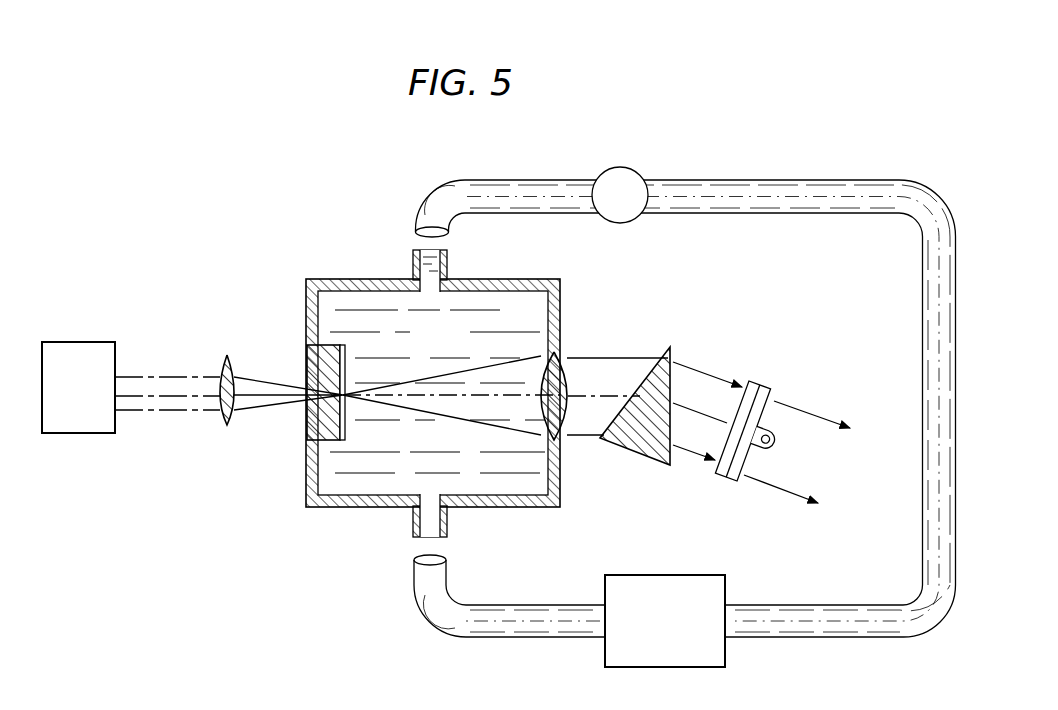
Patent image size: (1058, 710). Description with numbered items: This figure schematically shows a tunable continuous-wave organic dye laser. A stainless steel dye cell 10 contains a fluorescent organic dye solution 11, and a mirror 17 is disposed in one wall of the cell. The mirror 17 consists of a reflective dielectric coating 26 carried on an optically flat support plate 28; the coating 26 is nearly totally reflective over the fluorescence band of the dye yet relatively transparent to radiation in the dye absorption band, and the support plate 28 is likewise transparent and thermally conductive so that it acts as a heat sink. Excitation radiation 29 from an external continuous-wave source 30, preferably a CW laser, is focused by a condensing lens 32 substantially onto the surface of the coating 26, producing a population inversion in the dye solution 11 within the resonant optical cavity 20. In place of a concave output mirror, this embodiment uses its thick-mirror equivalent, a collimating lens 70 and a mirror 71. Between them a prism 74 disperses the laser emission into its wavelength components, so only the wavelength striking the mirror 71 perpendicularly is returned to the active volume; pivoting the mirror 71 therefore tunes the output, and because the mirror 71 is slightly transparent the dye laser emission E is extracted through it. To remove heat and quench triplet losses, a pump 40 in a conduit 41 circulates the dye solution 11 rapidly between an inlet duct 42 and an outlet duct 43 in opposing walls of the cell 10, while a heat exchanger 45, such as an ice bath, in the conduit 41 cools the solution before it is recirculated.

The dye cell 10 is at (355, 509).
The fluorescent organic dye solution 11 is at (482, 488).
The mirror 17 is at (323, 446).
The resonant optical cavity 20 is at (428, 366).
The reflective dielectric coating 26 is at (344, 378).
The optically flat support plate 28 is at (314, 362).
The radiation 29 is at (166, 411).
The external continuous-wave source 30 is at (88, 396).
The condensing lens 32 is at (231, 362).
The pump 40 is at (633, 207).
The conduit 41 is at (496, 183).
The inlet duct 42 is at (447, 265).
The outlet duct 43 is at (413, 524).
The heat exchanger 45 is at (680, 626).
The collimating lens 70 is at (565, 360).
The mirror 71 is at (763, 382).
The prism 74 is at (640, 455).
The dye laser emission E is at (815, 411).